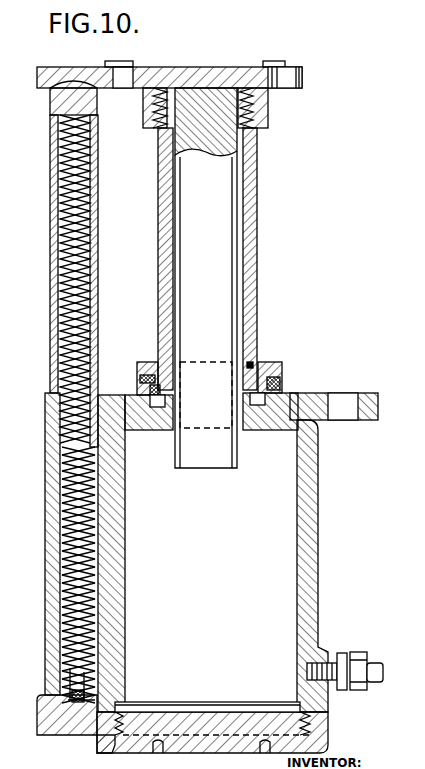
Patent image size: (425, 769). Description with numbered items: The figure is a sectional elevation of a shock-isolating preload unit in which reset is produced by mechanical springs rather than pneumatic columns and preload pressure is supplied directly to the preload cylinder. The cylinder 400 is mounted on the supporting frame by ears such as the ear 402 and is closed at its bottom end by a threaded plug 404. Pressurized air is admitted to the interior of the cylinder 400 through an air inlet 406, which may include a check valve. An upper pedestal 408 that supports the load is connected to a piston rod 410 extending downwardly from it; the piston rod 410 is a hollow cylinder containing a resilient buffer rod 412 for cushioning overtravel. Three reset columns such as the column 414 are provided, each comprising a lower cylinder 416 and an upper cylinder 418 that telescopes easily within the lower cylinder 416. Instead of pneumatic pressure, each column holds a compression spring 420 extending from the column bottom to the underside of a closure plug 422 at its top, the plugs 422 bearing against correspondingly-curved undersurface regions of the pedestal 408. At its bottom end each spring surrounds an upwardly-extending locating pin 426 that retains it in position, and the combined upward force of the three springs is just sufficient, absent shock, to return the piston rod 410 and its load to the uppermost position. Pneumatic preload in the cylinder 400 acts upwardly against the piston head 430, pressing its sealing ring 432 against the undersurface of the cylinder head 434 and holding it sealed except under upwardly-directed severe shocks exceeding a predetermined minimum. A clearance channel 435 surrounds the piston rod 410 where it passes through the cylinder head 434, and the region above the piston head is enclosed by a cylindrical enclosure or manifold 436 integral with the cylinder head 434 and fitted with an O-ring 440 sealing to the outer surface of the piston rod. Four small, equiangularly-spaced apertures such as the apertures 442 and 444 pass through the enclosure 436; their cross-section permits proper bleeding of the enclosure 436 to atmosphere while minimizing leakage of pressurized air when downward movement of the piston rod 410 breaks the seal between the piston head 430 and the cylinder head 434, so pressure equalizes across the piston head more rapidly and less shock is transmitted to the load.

The cylinder 400 is at (372, 523).
The ears 402 is at (368, 393).
The threaded plug 404 is at (178, 718).
The air inlet 406 is at (307, 670).
The upper pedestal 408 is at (349, 90).
The piston rod 410 is at (163, 258).
The resilient buffer rod 412 is at (224, 298).
The reset column 414 is at (55, 264).
The lower cylinder 416 is at (48, 548).
The upper cylinder 418 is at (55, 188).
The compression spring 420 is at (85, 323).
The closure plug 422 is at (57, 104).
The locating pin 426 is at (83, 705).
The piston head 430 is at (160, 432).
The sealing ring 432 is at (272, 432).
The cylinder head 434 is at (122, 385).
The clearance channel 435 is at (158, 392).
The cylindrical enclosure 436 is at (278, 362).
The O-ring 440 is at (248, 364).
The aperture 442 is at (283, 380).
The aperture 444 is at (150, 380).